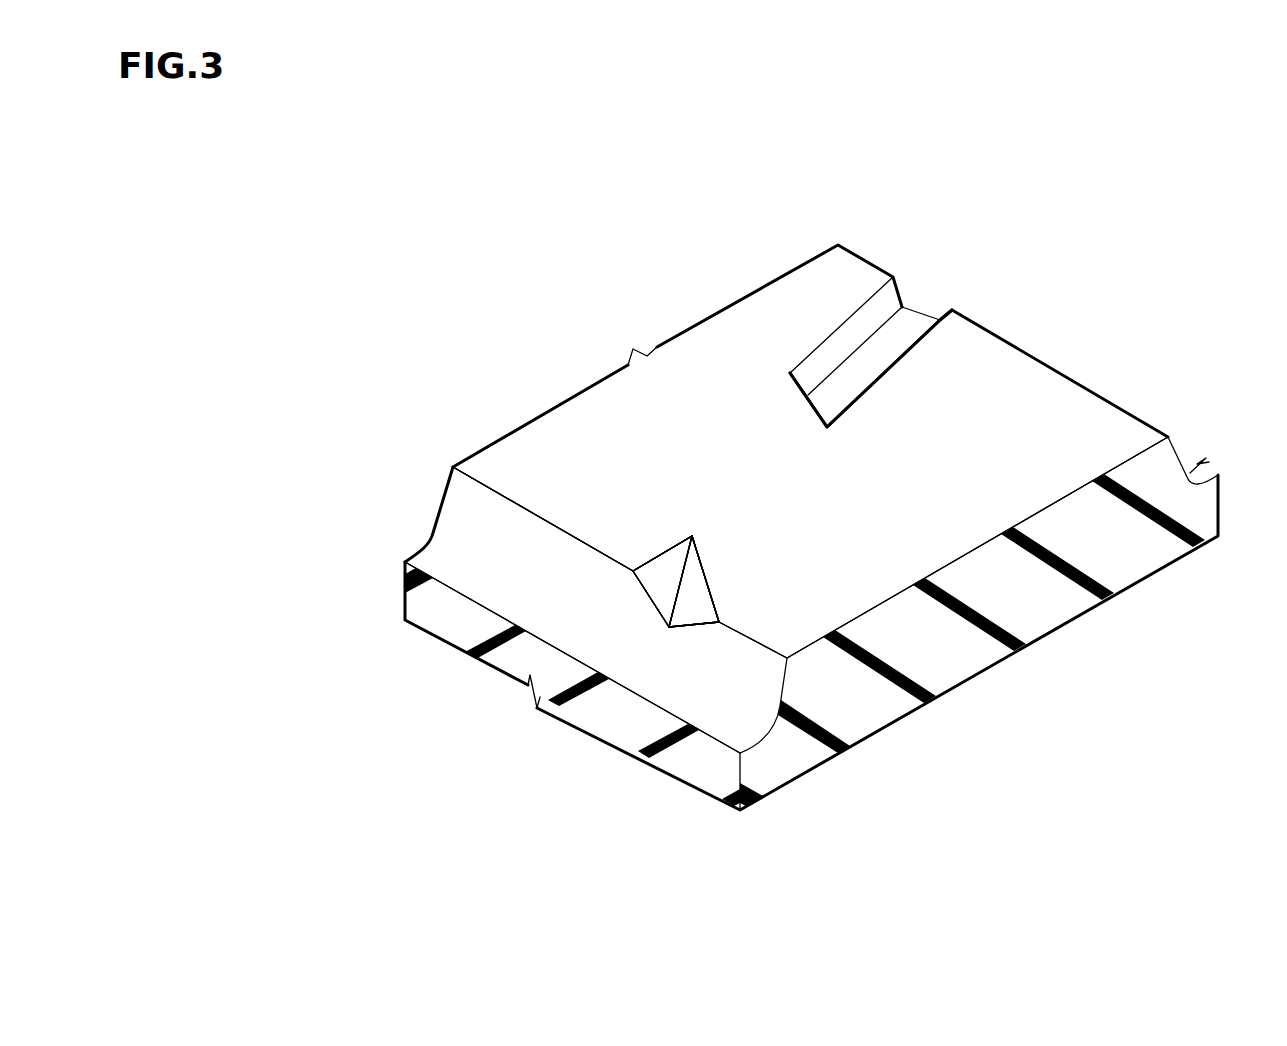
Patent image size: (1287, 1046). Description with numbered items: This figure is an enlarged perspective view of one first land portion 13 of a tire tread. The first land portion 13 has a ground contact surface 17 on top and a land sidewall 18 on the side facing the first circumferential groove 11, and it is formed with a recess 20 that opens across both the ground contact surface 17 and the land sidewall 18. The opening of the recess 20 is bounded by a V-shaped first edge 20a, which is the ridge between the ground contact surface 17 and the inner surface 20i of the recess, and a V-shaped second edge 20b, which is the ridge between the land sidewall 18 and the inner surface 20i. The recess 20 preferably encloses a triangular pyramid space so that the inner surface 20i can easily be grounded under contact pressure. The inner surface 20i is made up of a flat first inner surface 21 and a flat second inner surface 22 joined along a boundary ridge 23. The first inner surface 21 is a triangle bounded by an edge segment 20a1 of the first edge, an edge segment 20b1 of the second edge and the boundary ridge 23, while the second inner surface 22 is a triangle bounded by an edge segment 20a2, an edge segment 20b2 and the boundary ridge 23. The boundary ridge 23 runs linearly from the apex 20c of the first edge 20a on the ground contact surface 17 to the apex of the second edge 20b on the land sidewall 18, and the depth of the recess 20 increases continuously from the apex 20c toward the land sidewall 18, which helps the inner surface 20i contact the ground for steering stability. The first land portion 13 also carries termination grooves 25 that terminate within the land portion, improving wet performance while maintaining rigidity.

The first circumferential groove 11 is at (432, 562).
The first land portion 13 is at (703, 383).
The ground contact surface 17 is at (592, 418).
The land sidewall 18 is at (522, 548).
The recess 20 is at (667, 570).
The first edge 20a is at (703, 561).
The edge segment of the first edge 20a1 is at (632, 570).
The edge segment of the first edge 20a2 is at (708, 585).
The second edge 20b is at (693, 627).
The edge segment of the second edge 20b1 is at (630, 590).
The edge segment of the second edge 20b2 is at (720, 623).
The apex of the first edge 20c is at (695, 535).
The inner surface of the recess 20i is at (632, 840).
The first inner surface 21 is at (650, 590).
The second inner surface 22 is at (692, 605).
The boundary ridge 23 is at (683, 557).
The termination groove 25 is at (880, 357).